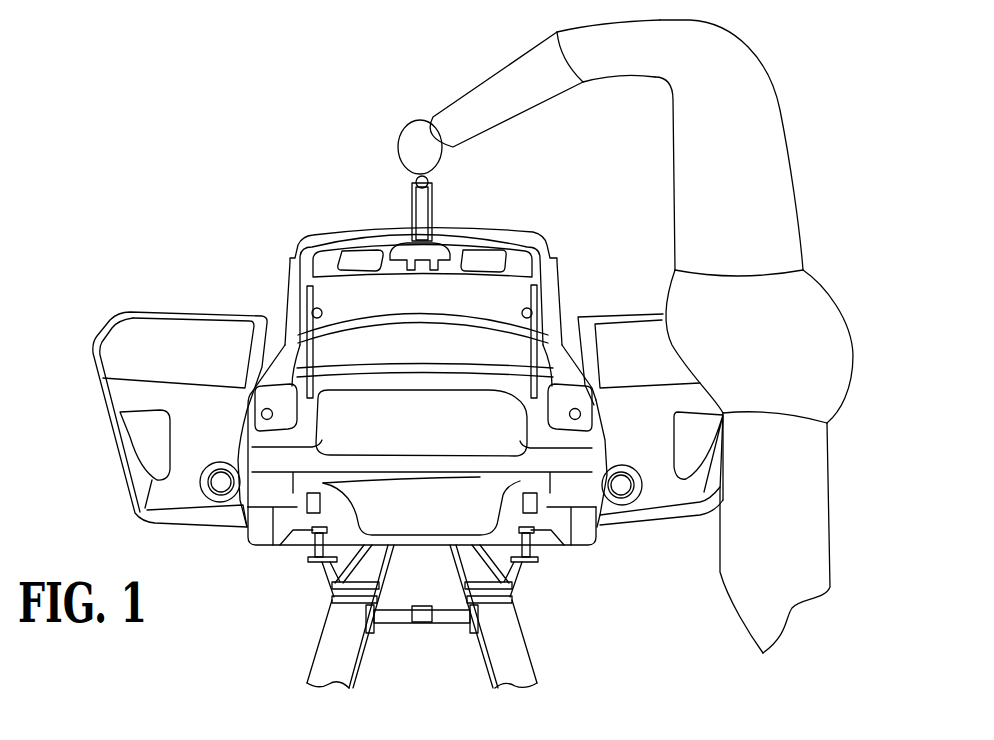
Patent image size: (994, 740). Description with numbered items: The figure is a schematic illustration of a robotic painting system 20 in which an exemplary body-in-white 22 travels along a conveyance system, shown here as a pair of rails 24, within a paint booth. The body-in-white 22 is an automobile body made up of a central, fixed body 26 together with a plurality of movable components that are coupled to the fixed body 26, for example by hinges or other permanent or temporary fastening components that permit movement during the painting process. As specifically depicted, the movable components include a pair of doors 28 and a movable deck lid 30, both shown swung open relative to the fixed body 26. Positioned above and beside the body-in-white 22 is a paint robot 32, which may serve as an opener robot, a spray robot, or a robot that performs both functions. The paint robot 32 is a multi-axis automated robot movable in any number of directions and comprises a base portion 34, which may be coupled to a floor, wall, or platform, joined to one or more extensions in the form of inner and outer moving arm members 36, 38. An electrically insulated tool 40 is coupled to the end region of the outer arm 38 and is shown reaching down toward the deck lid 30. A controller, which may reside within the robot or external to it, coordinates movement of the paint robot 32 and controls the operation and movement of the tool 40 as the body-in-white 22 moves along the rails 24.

The robotic painting system 20 is at (162, 152).
The body-in-white 22 is at (556, 243).
The pair of rails 24 is at (333, 657).
The fixed body 26 is at (473, 503).
The doors 28 is at (187, 316).
The deck lid 30 is at (458, 236).
The paint robot 32 is at (803, 116).
The base portion 34 is at (823, 373).
The inner moving arm member 36 is at (783, 241).
The outer moving arm member 38 is at (485, 88).
The electrically insulated tool 40 is at (389, 209).